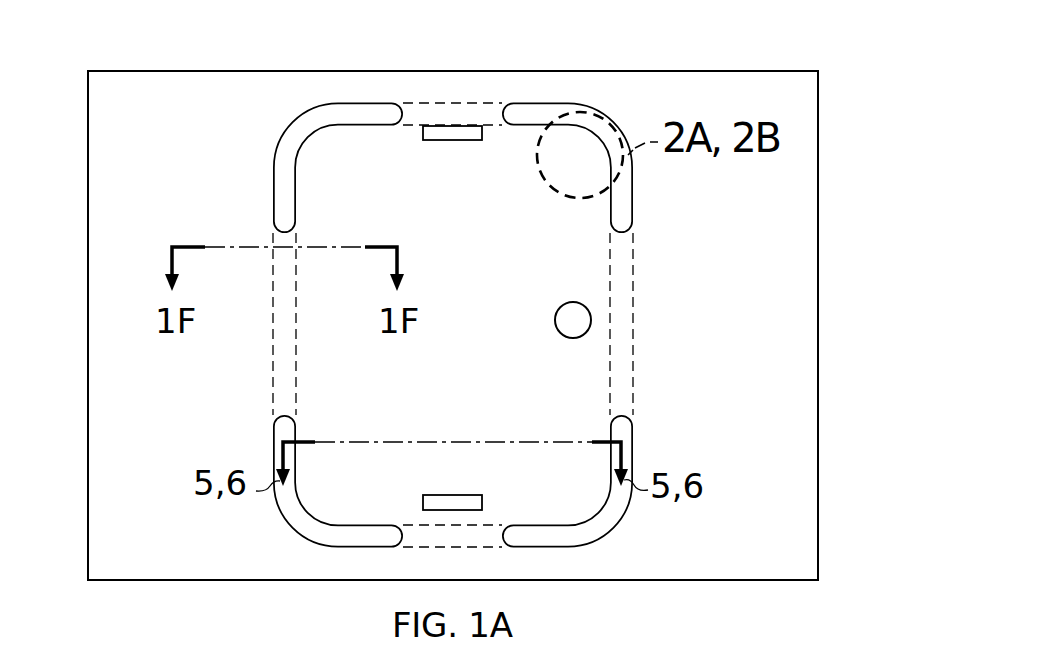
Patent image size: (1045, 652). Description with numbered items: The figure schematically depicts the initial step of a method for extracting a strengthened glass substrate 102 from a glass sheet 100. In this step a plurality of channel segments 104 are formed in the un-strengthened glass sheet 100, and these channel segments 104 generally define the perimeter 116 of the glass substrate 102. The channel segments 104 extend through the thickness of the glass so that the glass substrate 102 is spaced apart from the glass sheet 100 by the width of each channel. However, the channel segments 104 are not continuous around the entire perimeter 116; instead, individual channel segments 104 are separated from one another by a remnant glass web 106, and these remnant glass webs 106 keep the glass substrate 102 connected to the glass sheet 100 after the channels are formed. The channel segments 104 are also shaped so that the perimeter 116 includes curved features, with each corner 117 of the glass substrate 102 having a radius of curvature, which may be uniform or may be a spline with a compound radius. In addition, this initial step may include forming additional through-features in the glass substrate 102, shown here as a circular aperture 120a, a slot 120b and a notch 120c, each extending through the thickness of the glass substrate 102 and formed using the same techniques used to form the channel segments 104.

The glass sheet 100 is at (770, 58).
The glass substrate 102 is at (453, 292).
The channel segments 104 is at (273, 216).
The remnant glass web 106 is at (436, 103).
The perimeter 116 is at (296, 216).
The corner 117 is at (607, 134).
The circular aperture 120a is at (555, 320).
The slot 120b is at (453, 495).
The notch 120c is at (447, 140).